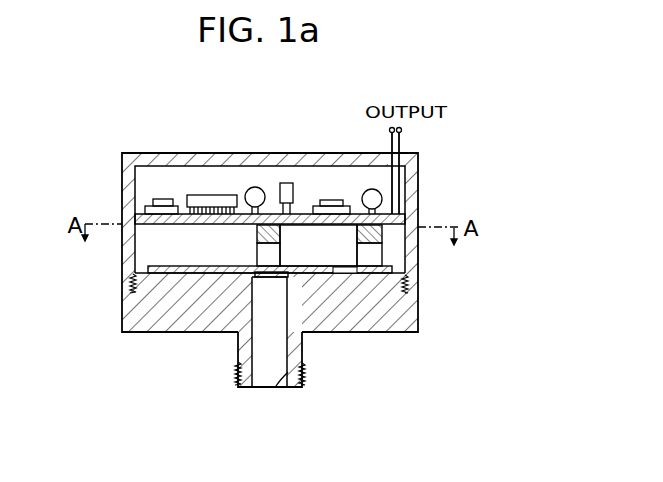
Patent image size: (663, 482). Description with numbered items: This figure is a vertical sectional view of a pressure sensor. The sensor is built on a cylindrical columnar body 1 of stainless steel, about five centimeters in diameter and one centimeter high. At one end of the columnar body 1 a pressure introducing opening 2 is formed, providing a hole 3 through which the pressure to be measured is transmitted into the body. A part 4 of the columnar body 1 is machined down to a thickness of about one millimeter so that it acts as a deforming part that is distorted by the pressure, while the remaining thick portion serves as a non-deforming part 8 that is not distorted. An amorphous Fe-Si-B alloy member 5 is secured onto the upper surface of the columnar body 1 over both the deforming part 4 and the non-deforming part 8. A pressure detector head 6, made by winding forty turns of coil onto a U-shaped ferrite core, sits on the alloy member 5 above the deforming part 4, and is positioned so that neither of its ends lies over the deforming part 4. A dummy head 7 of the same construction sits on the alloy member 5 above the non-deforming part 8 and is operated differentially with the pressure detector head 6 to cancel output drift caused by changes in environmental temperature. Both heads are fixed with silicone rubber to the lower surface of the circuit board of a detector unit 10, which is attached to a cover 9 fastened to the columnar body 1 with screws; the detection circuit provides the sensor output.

The columnar body 1 is at (403, 320).
The pressure introducing opening 2 is at (303, 374).
The hole 3 is at (265, 333).
The deforming part 4 is at (267, 289).
The amorphous alloy member 5 is at (312, 270).
The pressure detector head 6 is at (265, 254).
The dummy head 7 is at (370, 257).
The non-deforming part 8 is at (407, 288).
The cover 9 is at (418, 181).
The detector unit 10 is at (275, 178).